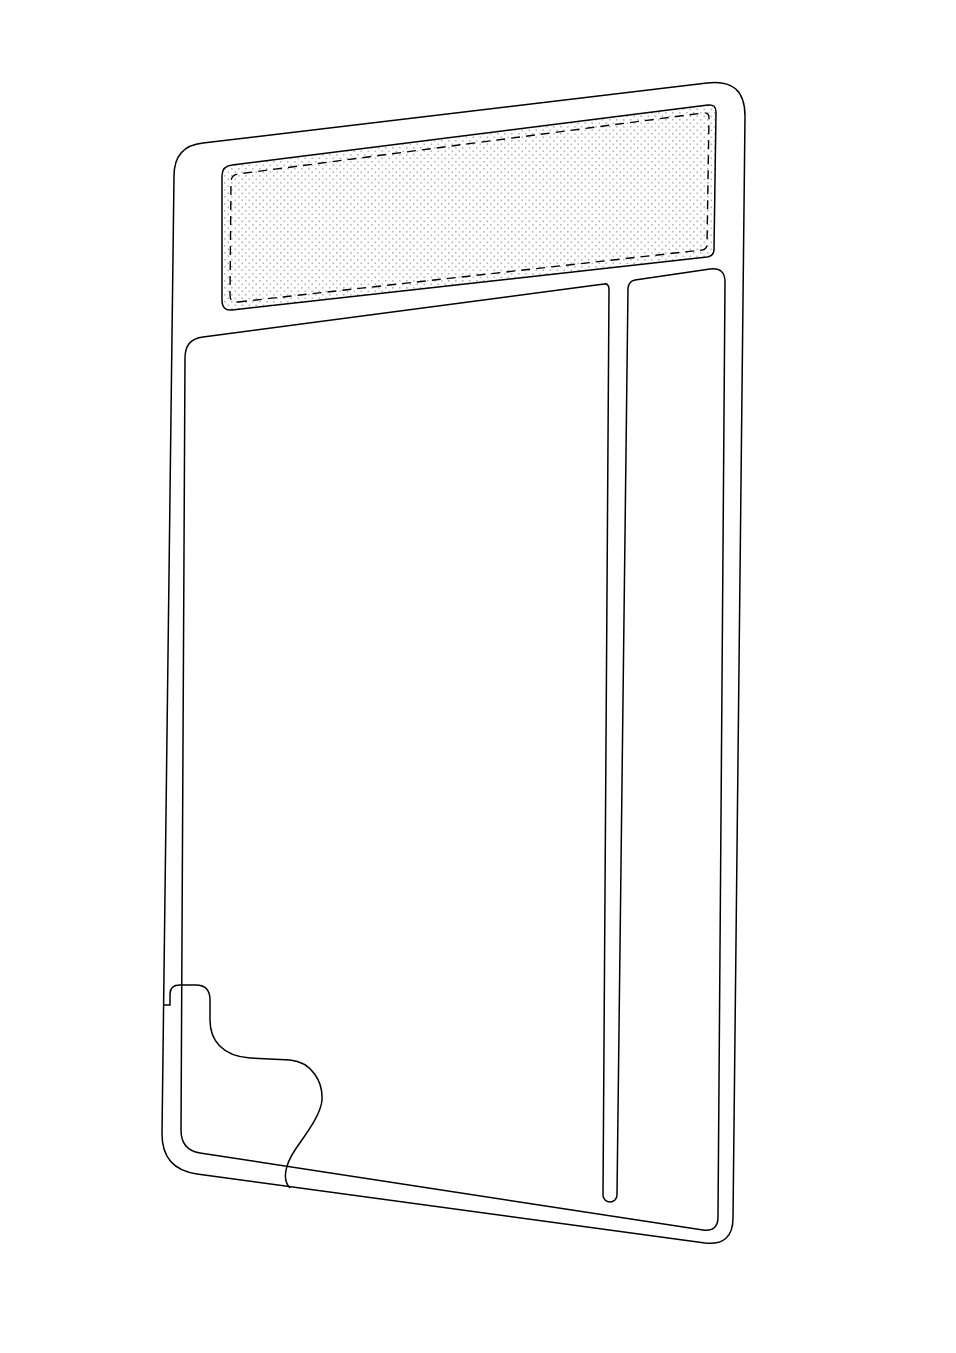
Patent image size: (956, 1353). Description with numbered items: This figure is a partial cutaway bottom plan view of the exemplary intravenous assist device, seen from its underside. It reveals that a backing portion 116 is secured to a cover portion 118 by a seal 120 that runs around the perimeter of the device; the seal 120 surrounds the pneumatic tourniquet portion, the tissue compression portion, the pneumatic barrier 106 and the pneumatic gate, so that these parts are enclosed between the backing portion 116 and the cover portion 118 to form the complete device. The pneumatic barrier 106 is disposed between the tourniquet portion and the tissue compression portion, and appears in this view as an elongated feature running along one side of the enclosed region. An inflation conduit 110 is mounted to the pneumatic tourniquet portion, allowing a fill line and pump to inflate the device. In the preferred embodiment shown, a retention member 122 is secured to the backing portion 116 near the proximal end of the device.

The inflation conduit 110 is at (332, 95).
The seal 120 is at (178, 476).
The retention member 122 is at (418, 178).
The pneumatic barrier 106 is at (617, 443).
The backing portion 116 is at (223, 913).
The cover portion 118 is at (203, 1104).